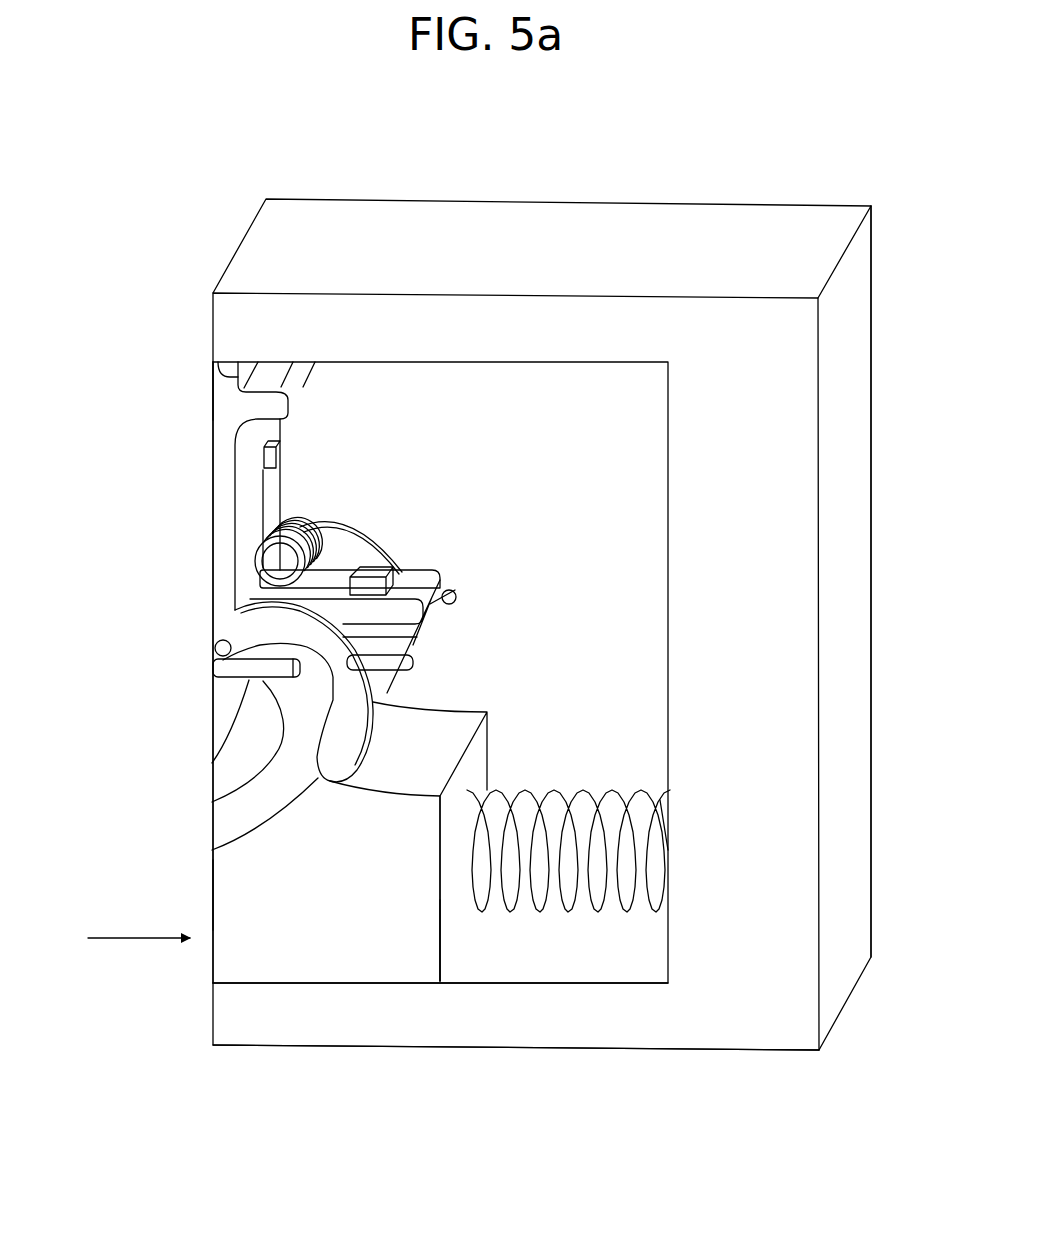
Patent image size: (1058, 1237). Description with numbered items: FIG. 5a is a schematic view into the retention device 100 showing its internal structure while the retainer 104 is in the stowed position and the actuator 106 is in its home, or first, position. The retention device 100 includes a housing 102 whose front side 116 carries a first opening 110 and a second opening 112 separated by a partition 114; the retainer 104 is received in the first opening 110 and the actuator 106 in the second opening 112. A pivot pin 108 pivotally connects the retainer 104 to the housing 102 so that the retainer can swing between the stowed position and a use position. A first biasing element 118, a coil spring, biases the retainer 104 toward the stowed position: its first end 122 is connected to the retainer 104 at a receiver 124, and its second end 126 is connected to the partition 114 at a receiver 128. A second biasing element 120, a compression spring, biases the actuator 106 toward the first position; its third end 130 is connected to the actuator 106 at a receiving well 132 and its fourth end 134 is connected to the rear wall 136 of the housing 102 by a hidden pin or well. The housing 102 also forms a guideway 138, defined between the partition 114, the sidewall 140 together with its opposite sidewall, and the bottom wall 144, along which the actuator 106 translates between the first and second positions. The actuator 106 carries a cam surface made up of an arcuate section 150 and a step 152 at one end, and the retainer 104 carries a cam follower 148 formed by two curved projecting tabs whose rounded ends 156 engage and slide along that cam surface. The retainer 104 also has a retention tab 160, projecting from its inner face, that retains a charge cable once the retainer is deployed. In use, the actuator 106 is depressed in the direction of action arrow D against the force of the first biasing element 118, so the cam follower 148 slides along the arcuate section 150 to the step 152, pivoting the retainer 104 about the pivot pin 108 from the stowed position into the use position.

The retention device 100 is at (182, 172).
The housing 102 is at (722, 232).
The retainer 104 is at (213, 522).
The actuator 106 is at (213, 890).
The pivot pin 108 is at (216, 648).
The first opening 110 is at (215, 364).
The second opening 112 is at (245, 982).
The partition 114 is at (437, 603).
The front side 116 is at (157, 1006).
The first biasing element 118 is at (291, 527).
The second biasing element 120 is at (581, 797).
The first end 122 is at (262, 470).
The receiver 124 is at (278, 455).
The second end 126 is at (341, 582).
The receiver 128 is at (378, 573).
The third end 130 is at (462, 808).
The receiving well 132 is at (462, 897).
The fourth end 134 is at (668, 808).
The rear wall 136 is at (842, 790).
The guideway 138 is at (462, 695).
The sidewall 140 is at (598, 457).
The bottom wall 144 is at (277, 1047).
The cam follower 148 is at (112, 770).
The arcuate section 150 is at (212, 802).
The step 152 is at (212, 763).
The rounded ends 156 is at (212, 850).
The retention tab 160 is at (297, 385).
The action arrow D is at (126, 938).